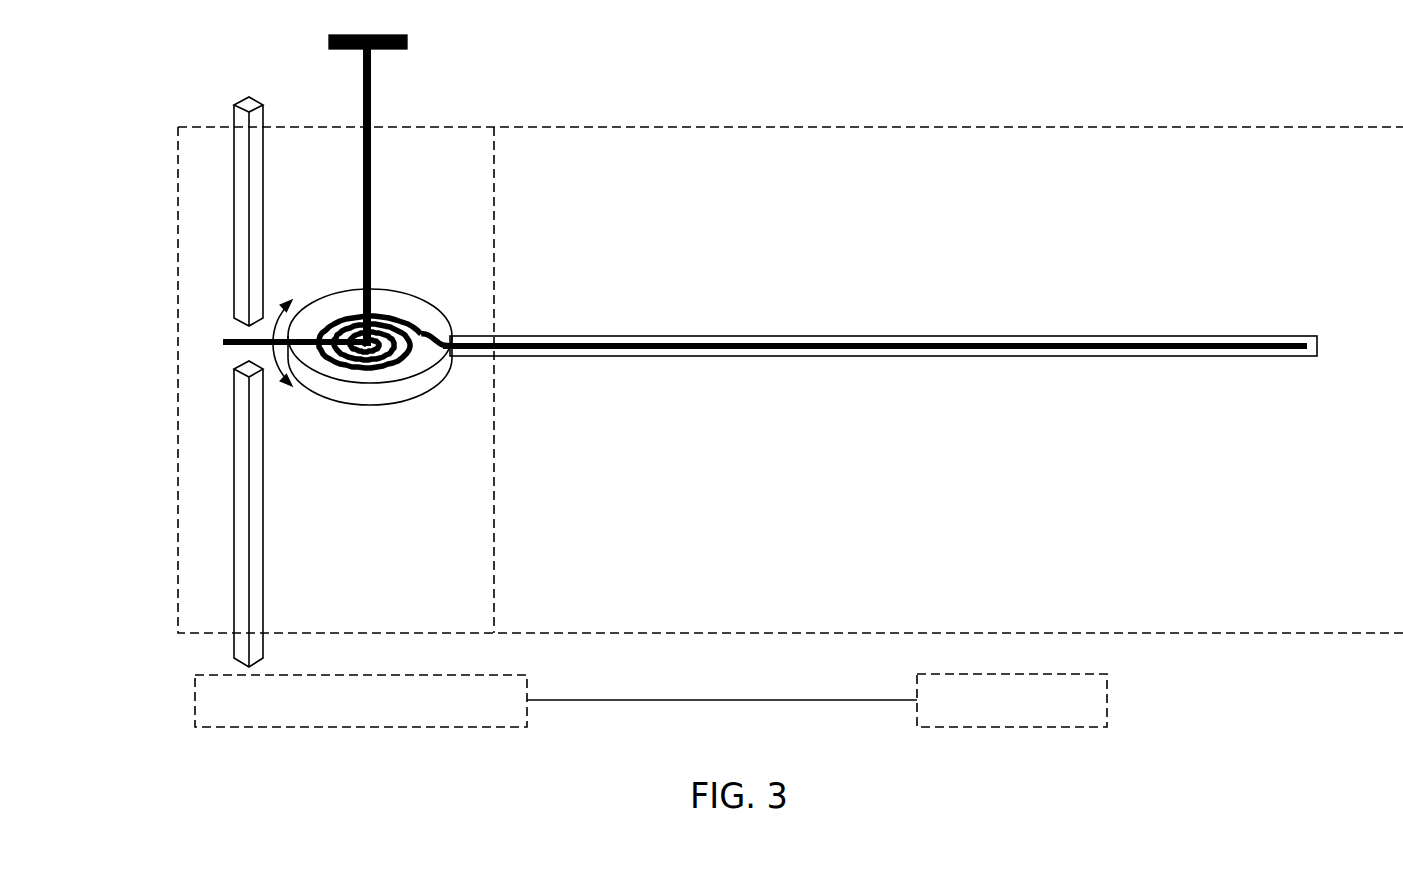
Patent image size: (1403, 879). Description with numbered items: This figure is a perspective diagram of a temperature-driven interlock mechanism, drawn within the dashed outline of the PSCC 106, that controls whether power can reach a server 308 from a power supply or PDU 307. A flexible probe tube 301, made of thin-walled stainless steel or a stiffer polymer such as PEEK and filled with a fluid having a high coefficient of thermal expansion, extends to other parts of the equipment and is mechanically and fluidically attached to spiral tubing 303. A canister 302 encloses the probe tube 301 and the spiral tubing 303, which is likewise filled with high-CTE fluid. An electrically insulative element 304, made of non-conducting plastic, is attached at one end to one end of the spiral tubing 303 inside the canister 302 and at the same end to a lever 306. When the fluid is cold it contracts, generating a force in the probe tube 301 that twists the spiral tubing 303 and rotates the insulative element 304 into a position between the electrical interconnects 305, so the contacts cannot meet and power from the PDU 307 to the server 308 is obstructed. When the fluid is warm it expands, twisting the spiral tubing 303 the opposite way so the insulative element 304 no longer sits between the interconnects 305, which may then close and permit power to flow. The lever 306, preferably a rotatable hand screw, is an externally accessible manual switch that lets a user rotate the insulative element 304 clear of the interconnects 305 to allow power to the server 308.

The PSCC (power supply control circuit) 106 is at (178, 198).
The flexible probe tube 301 is at (1137, 357).
The canister 302 is at (423, 393).
The spiral tubing 303 is at (367, 350).
The electrically insulative element 304 is at (287, 390).
The electrical interconnects 305 is at (235, 425).
The lever 306 is at (367, 127).
The PDU 307 is at (508, 715).
The server 308 is at (1085, 714).